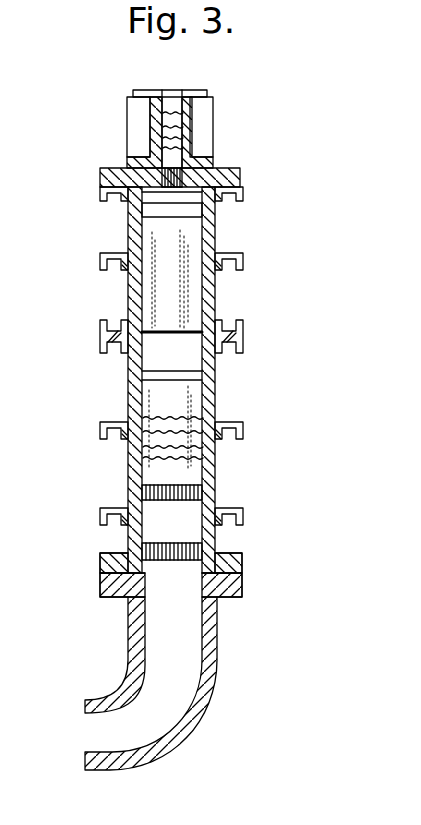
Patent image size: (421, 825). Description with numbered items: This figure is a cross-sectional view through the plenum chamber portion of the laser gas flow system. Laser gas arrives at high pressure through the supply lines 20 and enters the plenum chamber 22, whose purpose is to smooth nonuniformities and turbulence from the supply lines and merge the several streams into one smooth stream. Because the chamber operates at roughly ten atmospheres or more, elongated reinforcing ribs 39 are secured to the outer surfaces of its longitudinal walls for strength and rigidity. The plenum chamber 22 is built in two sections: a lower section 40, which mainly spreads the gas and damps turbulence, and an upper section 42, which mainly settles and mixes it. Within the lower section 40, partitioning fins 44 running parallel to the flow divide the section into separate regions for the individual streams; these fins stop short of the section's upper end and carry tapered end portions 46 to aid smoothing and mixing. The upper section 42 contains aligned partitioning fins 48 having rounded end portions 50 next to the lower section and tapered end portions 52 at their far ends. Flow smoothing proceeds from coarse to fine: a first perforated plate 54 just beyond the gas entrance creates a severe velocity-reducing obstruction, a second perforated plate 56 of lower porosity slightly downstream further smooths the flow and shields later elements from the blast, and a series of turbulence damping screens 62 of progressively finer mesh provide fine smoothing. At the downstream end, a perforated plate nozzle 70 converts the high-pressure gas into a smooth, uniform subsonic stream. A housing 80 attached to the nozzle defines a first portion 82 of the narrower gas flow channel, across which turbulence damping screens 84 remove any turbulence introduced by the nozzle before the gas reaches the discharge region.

The supply lines 20 is at (130, 619).
The plenum chamber 22 is at (125, 363).
The reinforcing ribs 39 is at (243, 265).
The lower section 40 is at (188, 358).
The upper section 42 is at (150, 191).
The partitioning fins 44 is at (157, 403).
The tapered end portions 46 is at (195, 377).
The partitioning fins 48 is at (153, 227).
The rounded end portions 50 is at (153, 325).
The tapered end portions 52 is at (195, 210).
The first perforated plate 54 is at (192, 536).
The second perforated plate 56 is at (163, 487).
The turbulence damping screens 62 is at (190, 432).
The perforated plate nozzle 70 is at (233, 172).
The housing 80 is at (150, 118).
The first portion 82 is at (168, 103).
The turbulence damping screens 84 is at (180, 147).